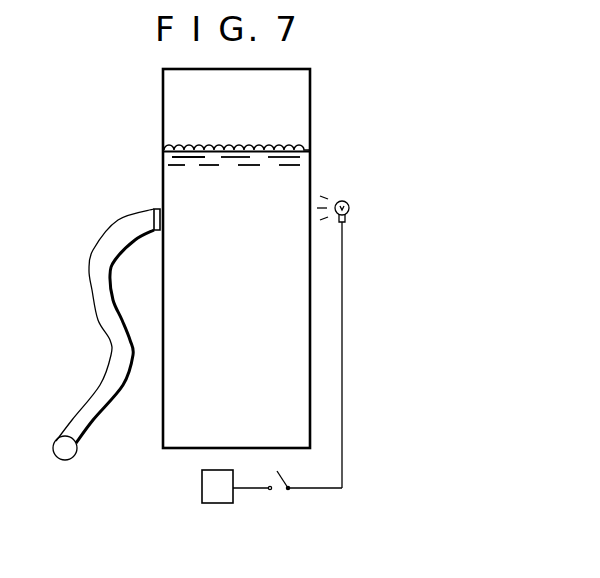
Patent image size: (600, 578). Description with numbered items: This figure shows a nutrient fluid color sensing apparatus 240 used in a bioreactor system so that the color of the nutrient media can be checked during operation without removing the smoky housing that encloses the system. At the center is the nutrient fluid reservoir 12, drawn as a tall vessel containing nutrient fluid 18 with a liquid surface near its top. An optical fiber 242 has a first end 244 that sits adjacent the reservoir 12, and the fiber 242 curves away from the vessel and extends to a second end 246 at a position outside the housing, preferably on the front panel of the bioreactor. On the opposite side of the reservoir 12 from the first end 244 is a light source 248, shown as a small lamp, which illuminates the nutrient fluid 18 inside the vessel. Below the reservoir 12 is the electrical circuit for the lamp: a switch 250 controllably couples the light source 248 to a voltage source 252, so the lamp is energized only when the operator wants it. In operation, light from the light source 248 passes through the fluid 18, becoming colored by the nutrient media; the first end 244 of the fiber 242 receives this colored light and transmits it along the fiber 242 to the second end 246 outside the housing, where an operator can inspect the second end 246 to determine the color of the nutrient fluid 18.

The nutrient fluid reservoir 12 is at (311, 127).
The nutrient fluid 18 is at (247, 317).
The color sensing apparatus 240 is at (265, 503).
The optical fiber 242 is at (111, 355).
The first end 244 is at (158, 213).
The second end 246 is at (60, 457).
The light source 248 is at (349, 205).
The switch 250 is at (281, 477).
The voltage source 252 is at (202, 482).